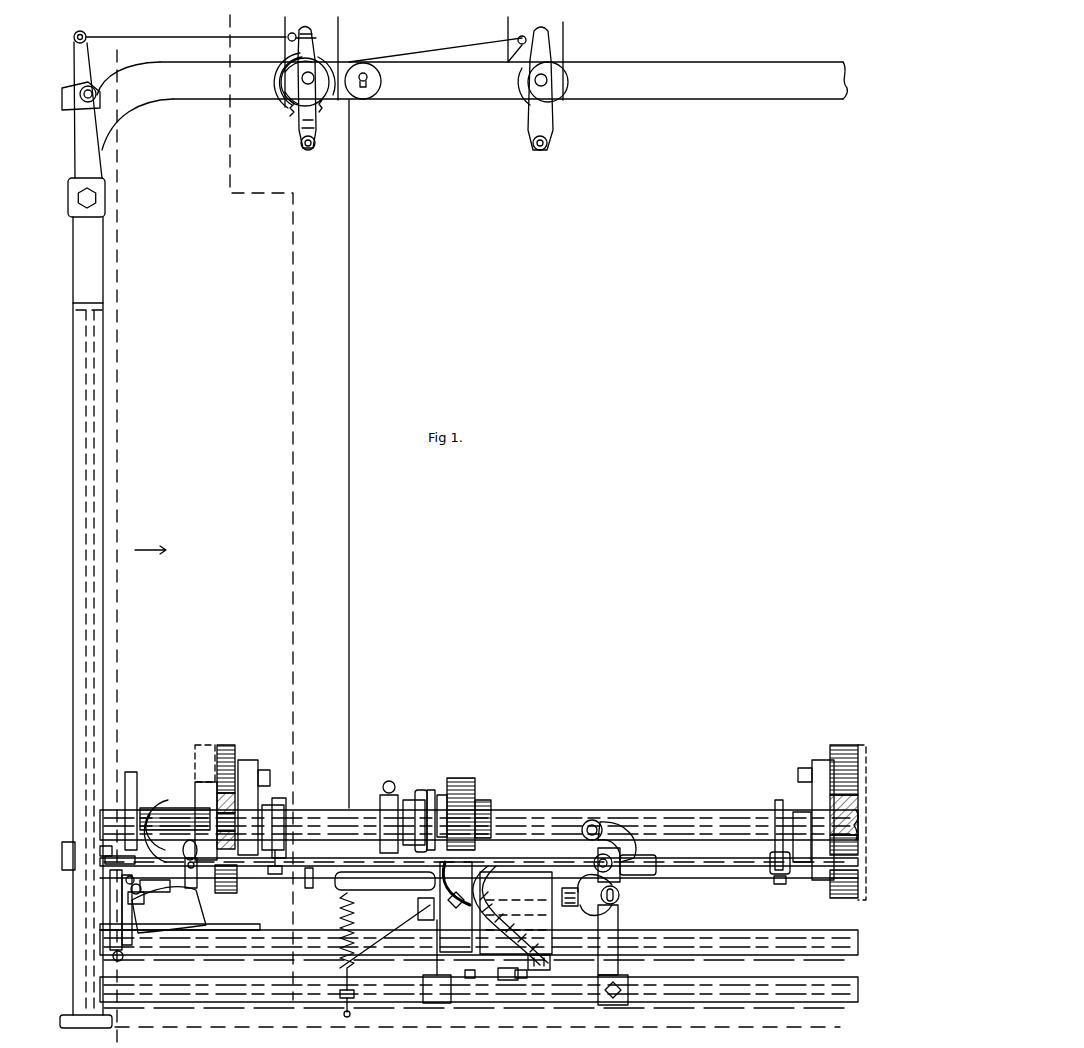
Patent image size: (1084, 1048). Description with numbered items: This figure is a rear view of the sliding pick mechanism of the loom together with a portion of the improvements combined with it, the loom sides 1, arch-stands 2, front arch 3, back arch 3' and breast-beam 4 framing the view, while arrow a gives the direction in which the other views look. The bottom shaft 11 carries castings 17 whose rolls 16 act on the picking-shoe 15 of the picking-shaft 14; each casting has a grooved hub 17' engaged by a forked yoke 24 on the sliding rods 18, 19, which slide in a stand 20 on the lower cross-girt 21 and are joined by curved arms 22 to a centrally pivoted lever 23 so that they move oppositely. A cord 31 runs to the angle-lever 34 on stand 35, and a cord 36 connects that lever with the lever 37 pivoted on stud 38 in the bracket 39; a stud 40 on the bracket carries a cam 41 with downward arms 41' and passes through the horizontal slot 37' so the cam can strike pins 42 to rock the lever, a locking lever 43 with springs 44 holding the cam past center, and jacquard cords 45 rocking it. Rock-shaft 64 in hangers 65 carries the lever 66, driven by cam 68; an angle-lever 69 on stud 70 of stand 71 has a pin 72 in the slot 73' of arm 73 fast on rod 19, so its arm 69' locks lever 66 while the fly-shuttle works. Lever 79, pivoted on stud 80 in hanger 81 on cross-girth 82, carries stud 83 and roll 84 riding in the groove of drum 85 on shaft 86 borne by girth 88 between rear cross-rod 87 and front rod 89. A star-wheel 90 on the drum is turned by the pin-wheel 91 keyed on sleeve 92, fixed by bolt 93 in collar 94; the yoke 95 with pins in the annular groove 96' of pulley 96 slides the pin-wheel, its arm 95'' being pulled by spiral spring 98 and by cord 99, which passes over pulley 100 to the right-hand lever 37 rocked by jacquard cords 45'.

The loom sides 1 is at (90, 656).
The arch-stands 2 is at (105, 252).
The front arch 3 is at (120, 540).
The back arch 3' is at (472, 106).
The breast-beam 4 is at (260, 501).
The bottom shaft 11 is at (686, 808).
The picking-shaft 14 is at (149, 894).
The picking-shoe 15 is at (206, 917).
The rolls 16 is at (235, 757).
The arms or castings 17 is at (536, 820).
The grooved hub 17' is at (285, 819).
The sliding rod 18 is at (724, 870).
The sliding rod 19 is at (70, 872).
The stand 20 is at (650, 882).
The lower cross-girt 21 is at (618, 926).
The curved arms 22 is at (610, 830).
The lever 23 is at (625, 894).
The forked arm or yoke 24 is at (290, 862).
The cord 31 is at (100, 850).
The angle-lever 34 is at (87, 34).
The stand 35 is at (95, 170).
The cord 36 is at (150, 37).
The lever 37 is at (441, 88).
The horizontal slot 37' is at (335, 31).
The stud 38 is at (317, 143).
The arm or bracket 39 is at (318, 116).
The stud 40 is at (318, 77).
The cam 41 is at (385, 68).
The arms 41' is at (275, 107).
The studs or pins 42 is at (560, 85).
The lever 43 is at (270, 80).
The springs 44 is at (292, 110).
The cords 45 is at (328, 53).
The cords 45' is at (556, 51).
The rock-shaft 64 is at (232, 924).
The hangers 65 is at (110, 912).
The lever 66 is at (110, 892).
The cam 68 is at (135, 780).
The angle-lever 69 is at (175, 807).
The arm 69' is at (166, 815).
The stud 70 is at (155, 882).
The stand 71 is at (125, 878).
The stud or pin 72 is at (262, 800).
The arm 73 is at (181, 864).
The slot 73' is at (299, 830).
The lever 79 is at (536, 964).
The stud 80 is at (530, 990).
The hanger 81 is at (470, 980).
The cross-girth 82 is at (704, 880).
The stud 83 is at (568, 958).
The roll 84 is at (478, 958).
The drum 85 is at (570, 960).
The stud or shaft 86 is at (578, 899).
The rear cross-rod 87 is at (397, 994).
The girth 88 is at (418, 912).
The front rod 89 is at (228, 952).
The star-wheel 90 is at (500, 985).
The pin-wheel 91 is at (466, 785).
The sleeve 92 is at (490, 810).
The bolt 93 is at (385, 784).
The collar or head 94 is at (385, 800).
The two-armed lever or yoke 95 is at (437, 790).
The arm 95'' is at (385, 885).
The pulley 96 is at (412, 795).
The annular groove 96' is at (424, 803).
The spiral spring 98 is at (340, 910).
The cord 99 is at (350, 376).
The pulley 100 is at (381, 80).
The arrow a is at (163, 551).